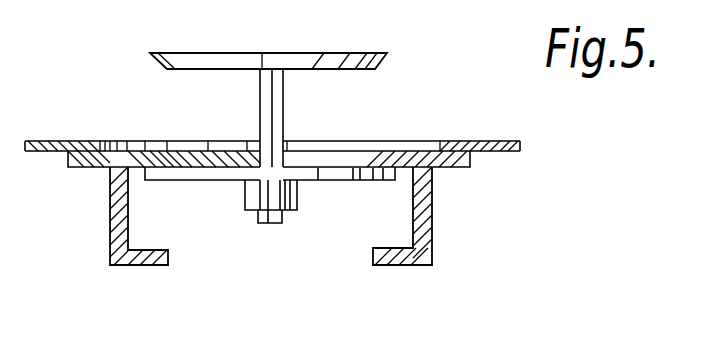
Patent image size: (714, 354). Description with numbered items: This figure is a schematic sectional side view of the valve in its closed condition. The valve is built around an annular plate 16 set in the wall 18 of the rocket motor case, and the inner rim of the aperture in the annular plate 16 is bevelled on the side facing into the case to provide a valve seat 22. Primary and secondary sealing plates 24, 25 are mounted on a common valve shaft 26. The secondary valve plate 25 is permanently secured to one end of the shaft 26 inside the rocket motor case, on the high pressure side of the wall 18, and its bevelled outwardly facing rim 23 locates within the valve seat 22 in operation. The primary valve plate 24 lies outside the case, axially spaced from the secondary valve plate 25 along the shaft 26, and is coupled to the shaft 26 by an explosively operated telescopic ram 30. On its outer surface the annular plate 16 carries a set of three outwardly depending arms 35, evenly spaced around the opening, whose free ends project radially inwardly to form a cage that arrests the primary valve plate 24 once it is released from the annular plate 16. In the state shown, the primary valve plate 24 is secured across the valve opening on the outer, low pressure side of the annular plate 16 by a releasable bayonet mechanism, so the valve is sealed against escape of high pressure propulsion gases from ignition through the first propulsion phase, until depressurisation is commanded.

The annular plate 16 is at (452, 172).
The wall 18 is at (53, 147).
The valve seat 22 is at (168, 152).
The bevelled outwardly facing rim 23 is at (152, 59).
The primary valve plate 24 is at (360, 172).
The secondary valve plate 25 is at (323, 63).
The valve shaft 26 is at (272, 131).
The explosively operated telescopic ram 30 is at (255, 197).
The outwardly depending arms 35 is at (413, 257).